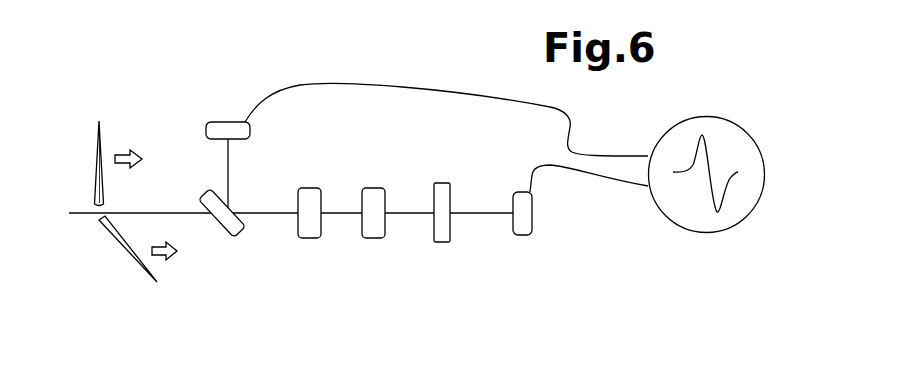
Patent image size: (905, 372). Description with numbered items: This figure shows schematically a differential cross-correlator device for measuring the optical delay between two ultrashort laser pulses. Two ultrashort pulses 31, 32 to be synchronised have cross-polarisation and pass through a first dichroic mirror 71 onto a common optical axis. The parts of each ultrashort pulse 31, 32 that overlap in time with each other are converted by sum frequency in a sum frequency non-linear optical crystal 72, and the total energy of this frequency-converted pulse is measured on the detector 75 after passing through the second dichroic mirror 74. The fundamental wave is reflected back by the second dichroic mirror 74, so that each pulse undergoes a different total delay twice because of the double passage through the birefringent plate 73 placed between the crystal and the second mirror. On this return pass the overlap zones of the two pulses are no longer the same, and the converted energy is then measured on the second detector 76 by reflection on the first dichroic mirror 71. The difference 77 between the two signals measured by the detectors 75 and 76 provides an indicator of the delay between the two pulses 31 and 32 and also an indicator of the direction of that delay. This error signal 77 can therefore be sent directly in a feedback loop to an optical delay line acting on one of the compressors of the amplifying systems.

The ultrashort pulse 31 is at (97, 163).
The ultrashort pulse 32 is at (115, 243).
The first dichroic mirror 71 is at (227, 238).
The sum frequency non-linear optical crystal 72 is at (310, 188).
The birefringent plate 73 is at (369, 238).
The second dichroic mirror 74 is at (440, 183).
The detector 75 is at (522, 235).
The second detector 76 is at (220, 121).
The difference / error signal 77 is at (723, 117).